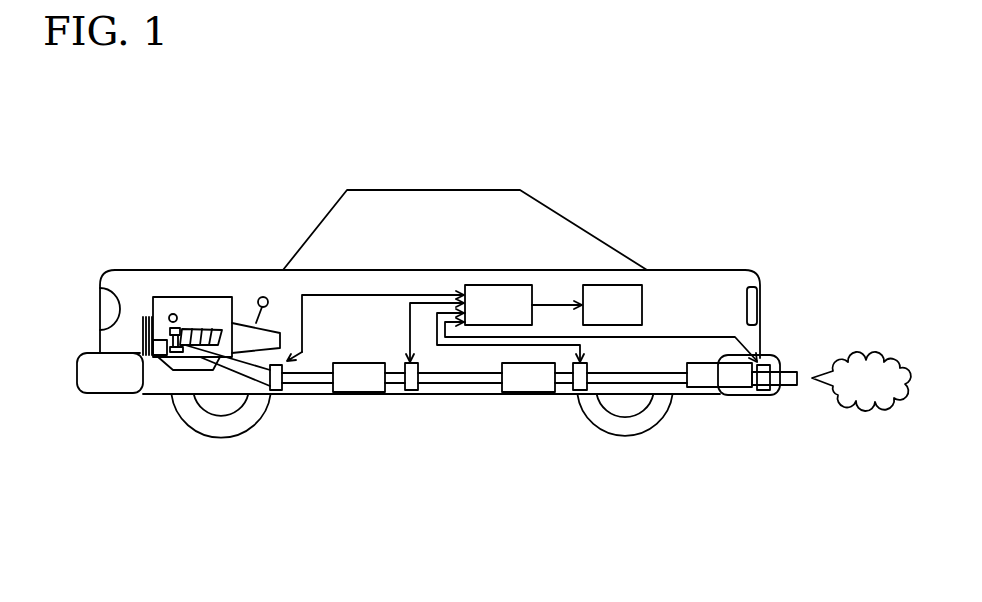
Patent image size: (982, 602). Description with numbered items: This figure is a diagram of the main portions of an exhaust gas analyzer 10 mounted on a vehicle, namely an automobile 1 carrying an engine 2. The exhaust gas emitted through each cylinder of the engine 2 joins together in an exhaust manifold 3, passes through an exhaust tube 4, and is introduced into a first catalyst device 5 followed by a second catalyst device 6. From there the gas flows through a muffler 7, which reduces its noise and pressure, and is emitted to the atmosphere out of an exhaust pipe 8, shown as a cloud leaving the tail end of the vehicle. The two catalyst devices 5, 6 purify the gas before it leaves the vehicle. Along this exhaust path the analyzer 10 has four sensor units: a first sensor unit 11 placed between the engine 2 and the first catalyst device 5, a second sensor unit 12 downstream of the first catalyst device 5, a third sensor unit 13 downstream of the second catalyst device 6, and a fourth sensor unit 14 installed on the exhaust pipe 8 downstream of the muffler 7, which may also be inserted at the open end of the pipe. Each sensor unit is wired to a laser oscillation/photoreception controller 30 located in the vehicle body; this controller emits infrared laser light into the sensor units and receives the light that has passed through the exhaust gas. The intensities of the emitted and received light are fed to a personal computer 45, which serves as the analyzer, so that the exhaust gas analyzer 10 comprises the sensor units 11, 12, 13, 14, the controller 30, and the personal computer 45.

The automobile 1 is at (205, 128).
The engine 2 is at (167, 303).
The exhaust manifold 3 is at (200, 333).
The exhaust tube 4 is at (233, 362).
The first catalyst device 5 is at (357, 395).
The second catalyst device 6 is at (520, 395).
The muffler 7 is at (705, 385).
The exhaust pipe 8 is at (790, 383).
The exhaust gas analyzer 10 is at (421, 253).
The first sensor unit 11 is at (275, 395).
The second sensor unit 12 is at (413, 395).
The third sensor unit 13 is at (582, 395).
The fourth sensor unit 14 is at (762, 393).
The laser oscillation/photoreception controller 30 is at (495, 295).
The personal computer 45 is at (625, 296).